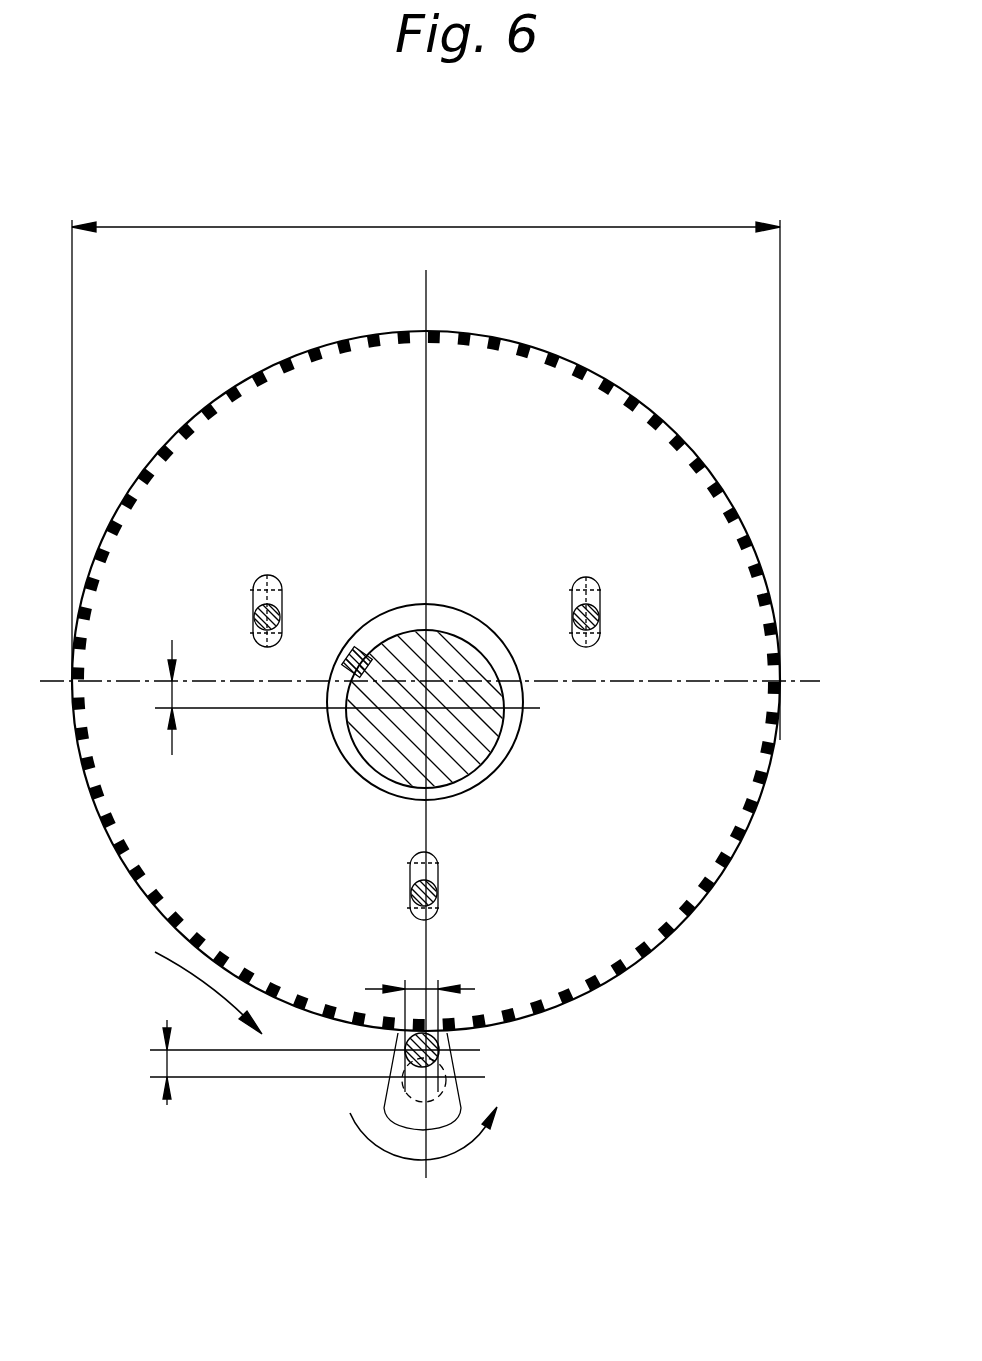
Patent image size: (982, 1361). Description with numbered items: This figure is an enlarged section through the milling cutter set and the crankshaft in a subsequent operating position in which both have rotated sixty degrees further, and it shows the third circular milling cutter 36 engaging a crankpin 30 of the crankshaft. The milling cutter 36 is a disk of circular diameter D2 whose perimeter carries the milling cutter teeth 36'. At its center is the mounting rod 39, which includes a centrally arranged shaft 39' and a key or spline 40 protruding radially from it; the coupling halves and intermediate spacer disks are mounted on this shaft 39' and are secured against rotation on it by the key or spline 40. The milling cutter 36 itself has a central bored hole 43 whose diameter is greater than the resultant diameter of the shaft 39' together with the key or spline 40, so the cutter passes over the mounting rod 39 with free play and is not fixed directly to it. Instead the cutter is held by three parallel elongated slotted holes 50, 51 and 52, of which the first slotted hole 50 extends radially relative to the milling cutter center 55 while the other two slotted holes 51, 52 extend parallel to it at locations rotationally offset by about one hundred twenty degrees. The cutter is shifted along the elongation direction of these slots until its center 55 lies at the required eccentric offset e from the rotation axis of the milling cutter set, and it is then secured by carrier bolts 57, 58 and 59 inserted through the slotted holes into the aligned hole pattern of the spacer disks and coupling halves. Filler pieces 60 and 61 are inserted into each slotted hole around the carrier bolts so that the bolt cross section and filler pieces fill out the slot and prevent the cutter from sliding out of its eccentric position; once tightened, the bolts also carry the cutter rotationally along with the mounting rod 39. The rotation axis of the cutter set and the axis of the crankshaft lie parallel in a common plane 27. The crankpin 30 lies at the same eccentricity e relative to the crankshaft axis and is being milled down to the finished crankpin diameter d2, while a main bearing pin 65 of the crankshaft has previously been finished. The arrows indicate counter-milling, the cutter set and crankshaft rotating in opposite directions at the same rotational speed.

The plane 27 is at (428, 295).
The circular milling cutter 36 is at (426, 653).
The milling cutter teeth 36' is at (426, 650).
The mounting rod 39 is at (511, 716).
The shaft 39' is at (459, 589).
The key or spline 40 is at (350, 662).
The central bored hole 43 is at (497, 762).
The elongated slotted hole 50 is at (583, 942).
The elongated slotted hole 51 is at (634, 514).
The elongated slotted hole 52 is at (202, 502).
The milling cutter center 55 is at (463, 652).
The carrier bolt 57 is at (256, 617).
The carrier bolt 58 is at (438, 890).
The carrier bolt 59 is at (574, 620).
The filler piece 60 is at (283, 575).
The filler piece 61 is at (257, 638).
The crankpin 30 is at (443, 1040).
The main bearing pin 65 is at (408, 1086).
The circular diameter of the milling cutters D2 is at (452, 227).
The finished crankpin diameter d2 is at (440, 955).
The eccentricity e is at (172, 702).